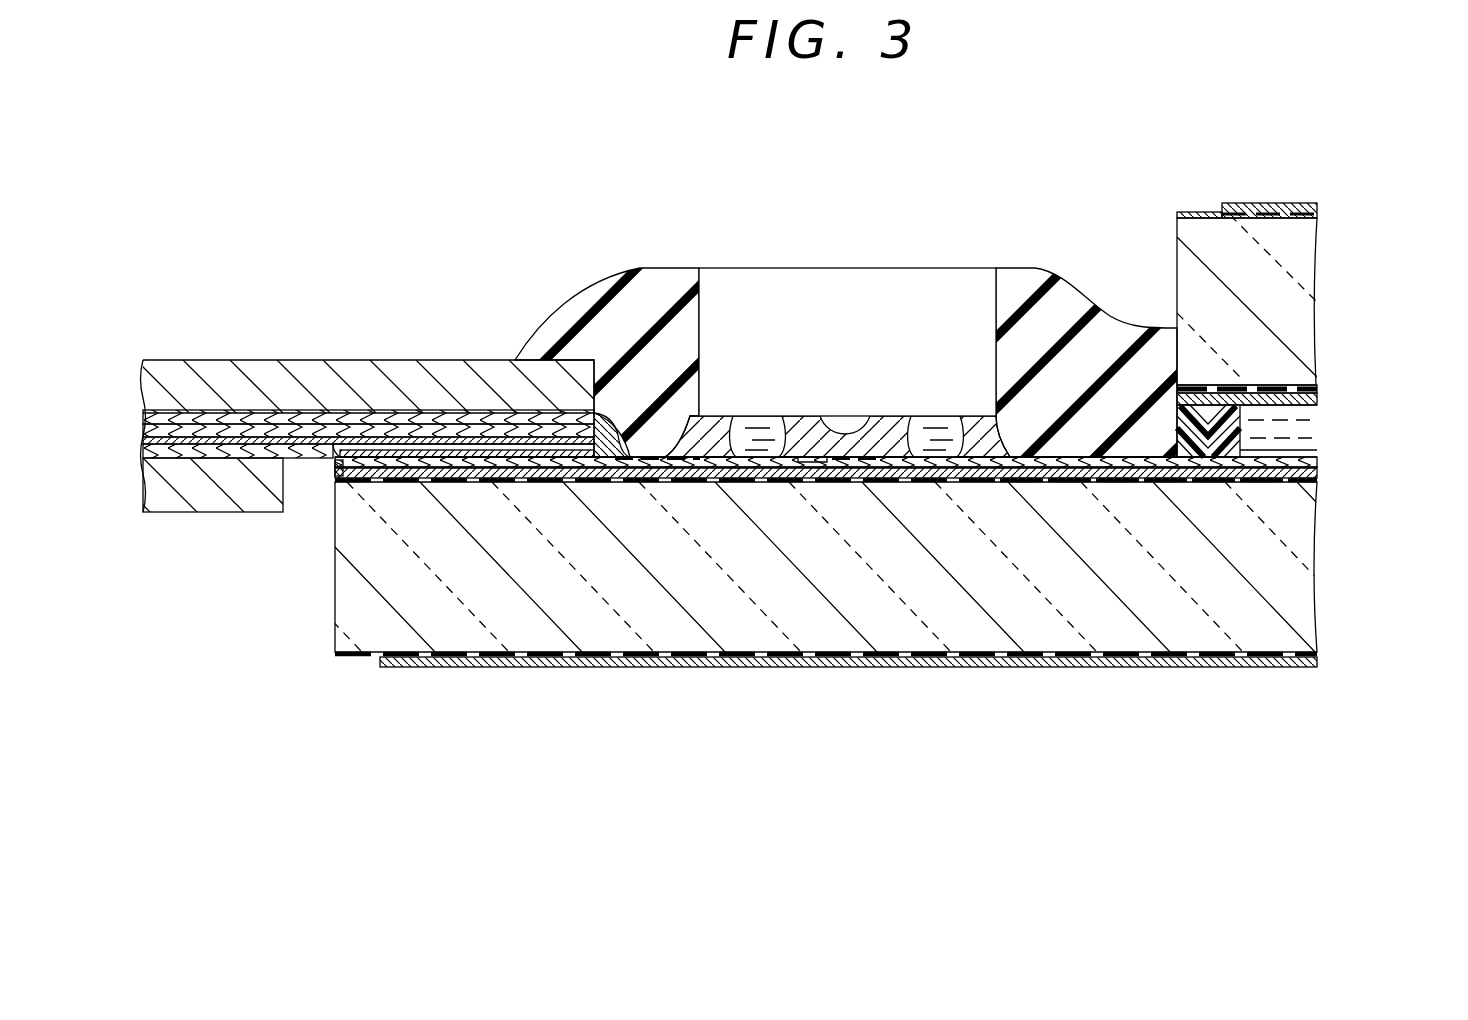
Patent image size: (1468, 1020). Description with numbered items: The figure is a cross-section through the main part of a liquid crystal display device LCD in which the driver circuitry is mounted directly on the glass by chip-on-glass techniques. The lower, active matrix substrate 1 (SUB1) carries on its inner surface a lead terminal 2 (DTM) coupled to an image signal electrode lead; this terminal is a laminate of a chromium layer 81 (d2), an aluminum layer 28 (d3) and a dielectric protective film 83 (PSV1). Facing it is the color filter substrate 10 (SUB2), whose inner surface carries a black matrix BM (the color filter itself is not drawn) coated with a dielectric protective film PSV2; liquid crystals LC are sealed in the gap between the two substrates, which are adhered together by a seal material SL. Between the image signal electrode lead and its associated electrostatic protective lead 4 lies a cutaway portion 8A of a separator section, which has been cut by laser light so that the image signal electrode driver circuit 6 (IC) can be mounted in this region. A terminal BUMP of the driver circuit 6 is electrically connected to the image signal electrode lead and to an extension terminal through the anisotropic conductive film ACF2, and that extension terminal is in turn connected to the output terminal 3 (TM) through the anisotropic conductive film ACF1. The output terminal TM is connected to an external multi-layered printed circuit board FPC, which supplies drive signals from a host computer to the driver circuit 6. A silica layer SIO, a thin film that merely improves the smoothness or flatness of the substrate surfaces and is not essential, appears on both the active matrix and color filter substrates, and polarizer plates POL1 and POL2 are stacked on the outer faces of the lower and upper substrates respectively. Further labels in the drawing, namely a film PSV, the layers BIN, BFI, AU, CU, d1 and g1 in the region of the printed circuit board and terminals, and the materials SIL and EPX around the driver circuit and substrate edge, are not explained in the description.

The active matrix substrate 1 is at (485, 632).
The lead terminal 2 is at (1260, 485).
The output terminal 3 is at (427, 445).
The electrostatic protective lead 4 is at (835, 462).
The image signal electrode driver circuit 6 is at (847, 342).
The cutaway portion 8A is at (878, 478).
The color filter substrate 10 is at (1200, 227).
The aluminum layer 28 is at (1300, 482).
The chromium layer 81 is at (1270, 483).
The dielectric protective film 83 is at (1305, 470).
The external circuit FPC is at (165, 357).
The base insulating film BIN is at (200, 450).
The base film BFI is at (272, 418).
The output terminal TM is at (512, 455).
The silicone resin SIL is at (668, 290).
The terminal of the image signal electrode driver circuit BUMP is at (947, 425).
The polarizer plate POL2 is at (1233, 205).
The polarizer plate POL1 is at (410, 665).
The silica layer SIO is at (1322, 218).
The black matrix BM is at (1270, 387).
The dielectric protective film PSV2 is at (1318, 402).
The seal material SL is at (1215, 425).
The liquid crystals LC is at (1295, 438).
The epoxy resin EPX is at (1257, 483).
The liquid crystal display device LCD is at (1055, 670).
The anisotropic conductive film ACF1 is at (538, 462).
The anisotropic conductive film ACF2 is at (705, 462).
The protective film PSV is at (645, 478).
The gold plating layer AU is at (165, 441).
The copper wiring CU is at (200, 475).
The conductive layer d1 is at (325, 472).
The gate layer g1 is at (330, 462).